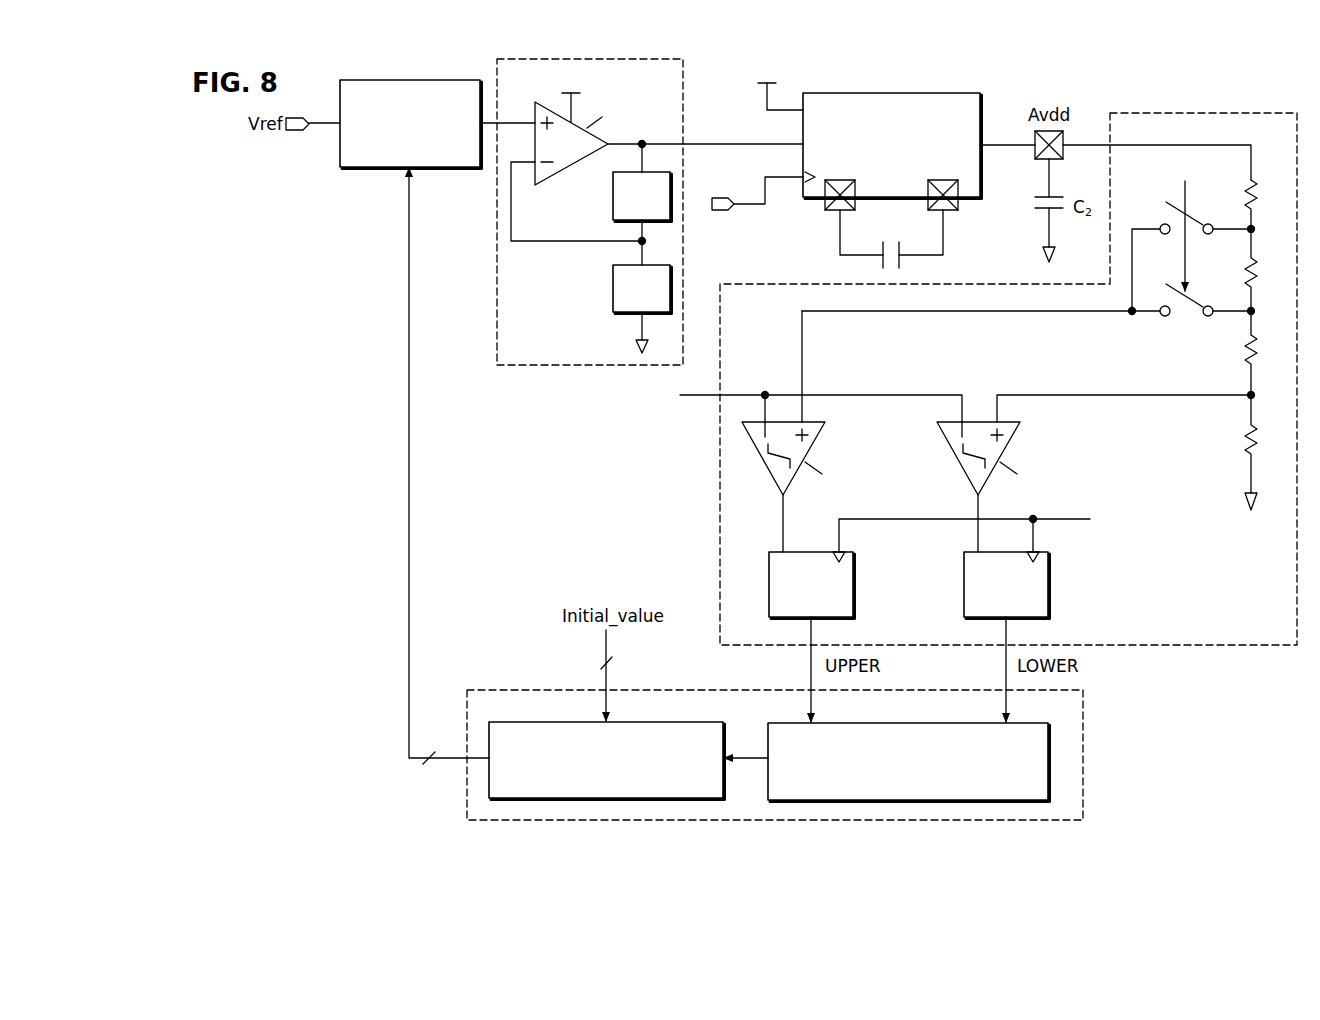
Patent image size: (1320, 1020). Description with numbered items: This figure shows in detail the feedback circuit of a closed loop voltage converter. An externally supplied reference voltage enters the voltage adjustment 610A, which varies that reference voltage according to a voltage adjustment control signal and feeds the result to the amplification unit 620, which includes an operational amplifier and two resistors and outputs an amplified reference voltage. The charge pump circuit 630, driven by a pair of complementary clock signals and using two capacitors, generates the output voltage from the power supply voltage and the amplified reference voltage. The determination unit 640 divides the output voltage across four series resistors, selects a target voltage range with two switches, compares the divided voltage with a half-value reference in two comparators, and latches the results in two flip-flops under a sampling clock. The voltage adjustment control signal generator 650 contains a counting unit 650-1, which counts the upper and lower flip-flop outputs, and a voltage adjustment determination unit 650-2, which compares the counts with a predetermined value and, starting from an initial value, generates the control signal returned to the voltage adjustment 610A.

The voltage adjustment 610A is at (413, 79).
The amplification unit 620 is at (683, 118).
The charge pump circuit 630 is at (895, 93).
The determination unit 640 is at (1215, 113).
The voltage adjustment control signal generator 650 is at (1085, 748).
The counting unit 650-1 is at (910, 723).
The voltage adjustment determination unit 650-2 is at (627, 722).